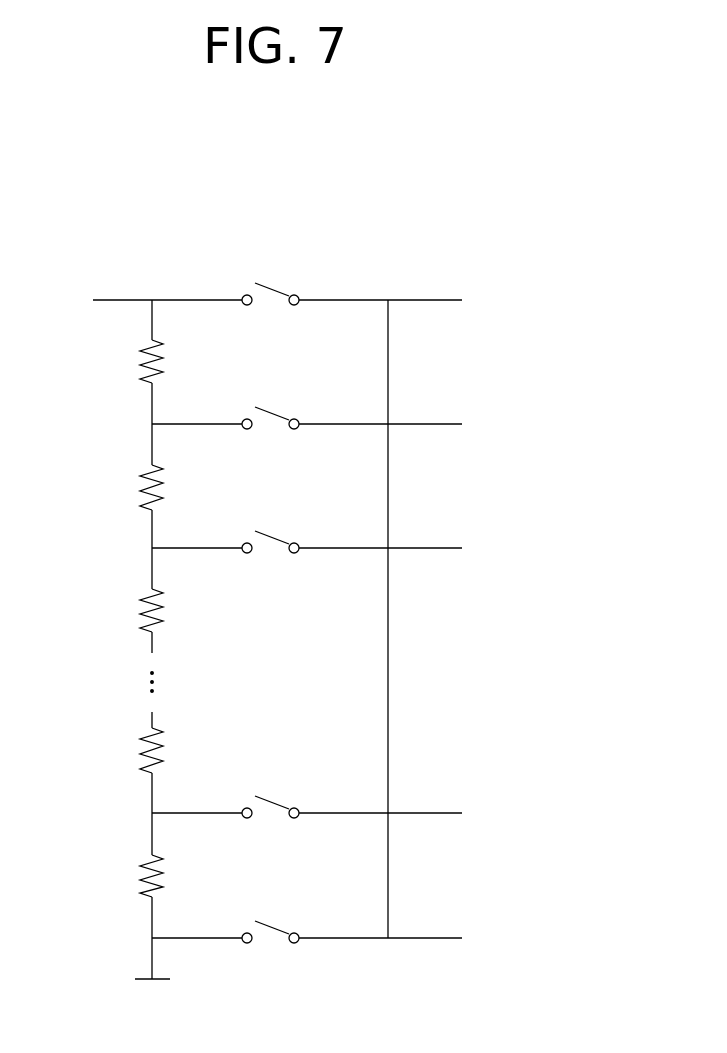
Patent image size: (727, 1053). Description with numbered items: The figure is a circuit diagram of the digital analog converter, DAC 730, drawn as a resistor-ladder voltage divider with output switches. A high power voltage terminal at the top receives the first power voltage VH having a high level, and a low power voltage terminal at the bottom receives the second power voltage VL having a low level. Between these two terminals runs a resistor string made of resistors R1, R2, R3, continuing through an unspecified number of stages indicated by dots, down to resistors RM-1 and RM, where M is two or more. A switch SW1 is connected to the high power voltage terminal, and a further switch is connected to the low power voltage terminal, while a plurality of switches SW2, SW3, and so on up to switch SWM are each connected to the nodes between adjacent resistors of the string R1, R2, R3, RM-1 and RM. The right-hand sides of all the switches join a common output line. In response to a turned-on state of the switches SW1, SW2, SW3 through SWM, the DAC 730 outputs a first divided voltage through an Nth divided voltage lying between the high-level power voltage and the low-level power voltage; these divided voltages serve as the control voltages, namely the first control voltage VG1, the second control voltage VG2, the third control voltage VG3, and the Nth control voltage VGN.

The DAC 730 is at (533, 233).
The resistor R1 is at (134, 361).
The resistor R2 is at (131, 487).
The resistor R3 is at (133, 610).
The resistor RM-1 is at (120, 750).
The resistor RM is at (132, 876).
The switch SW1 is at (270, 310).
The switch SW2 is at (270, 434).
The switch SW3 is at (270, 558).
The switch SWM is at (270, 823).
The first power voltage VH is at (148, 301).
The second power voltage VL is at (152, 996).
The first control voltage VG1 is at (380, 284).
The second control voltage VG2 is at (380, 408).
The third control voltage VG3 is at (380, 532).
The Nth control voltage VGN is at (380, 922).